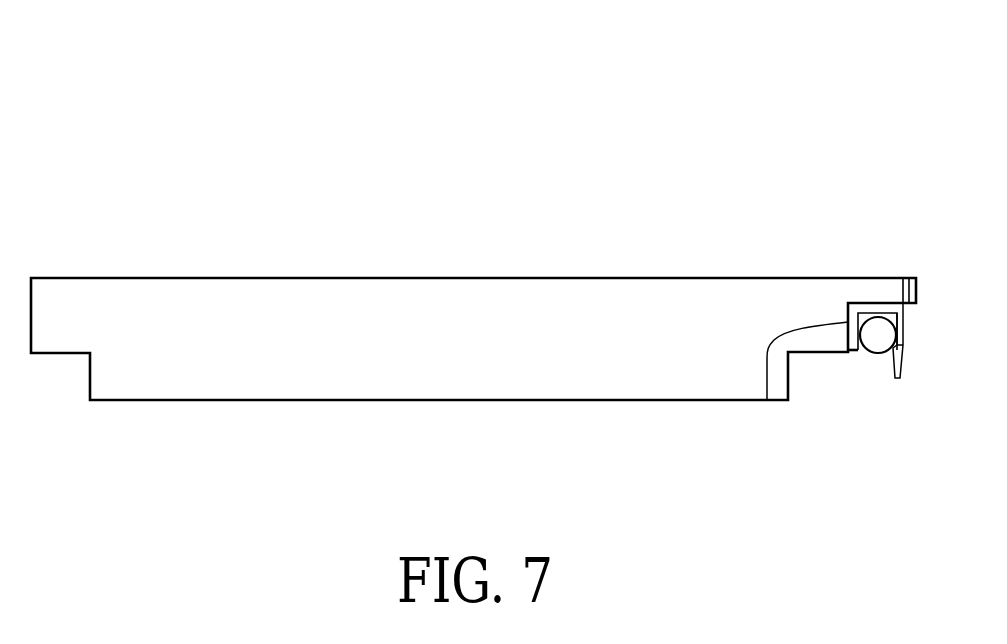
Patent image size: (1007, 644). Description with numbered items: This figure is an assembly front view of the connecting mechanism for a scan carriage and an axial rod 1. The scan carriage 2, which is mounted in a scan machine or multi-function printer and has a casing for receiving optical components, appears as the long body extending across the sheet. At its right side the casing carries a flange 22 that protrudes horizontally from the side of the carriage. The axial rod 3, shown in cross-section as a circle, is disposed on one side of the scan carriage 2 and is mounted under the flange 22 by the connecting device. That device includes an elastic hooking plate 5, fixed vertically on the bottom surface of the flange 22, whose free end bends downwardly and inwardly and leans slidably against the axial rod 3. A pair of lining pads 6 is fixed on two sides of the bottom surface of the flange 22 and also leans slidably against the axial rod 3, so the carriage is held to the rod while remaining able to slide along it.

The connecting mechanism for a scan carriage and an axial rod 1 is at (562, 69).
The scan carriage 2 is at (633, 296).
The flange 22 is at (884, 290).
The axial rod 3 is at (875, 340).
The elastic hooking plate 5 is at (905, 330).
The lining pads 6 is at (767, 400).